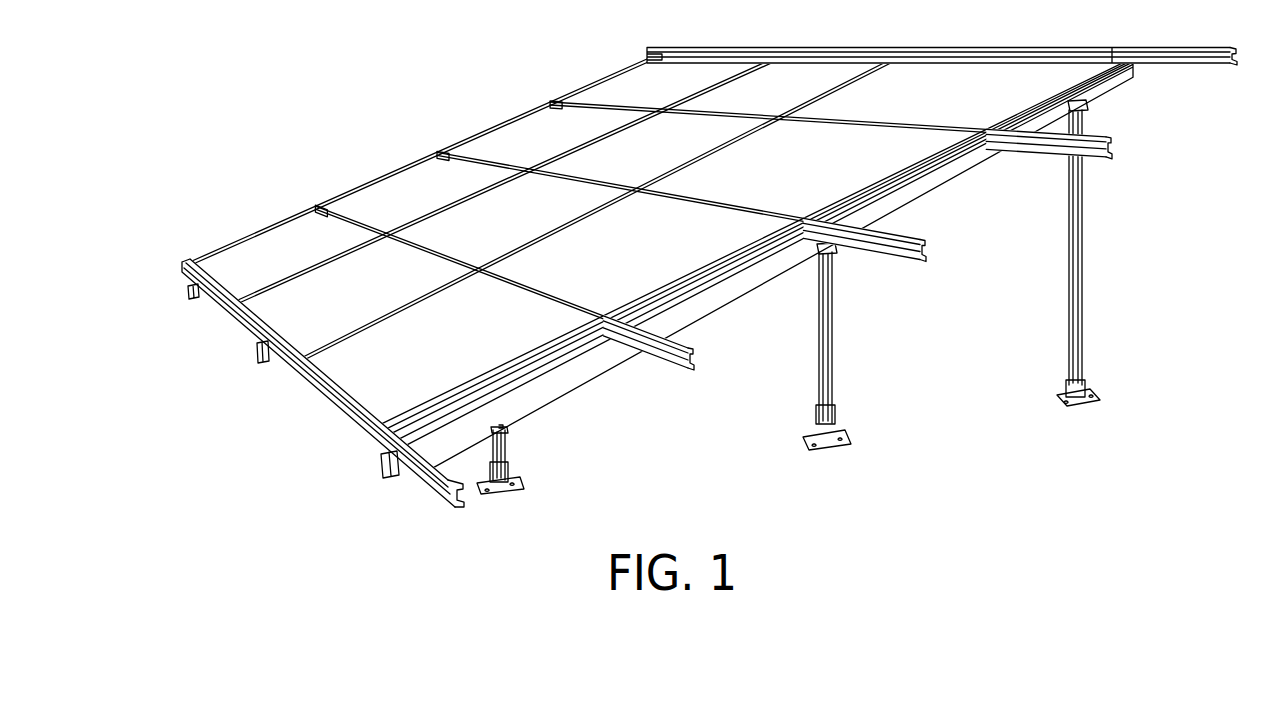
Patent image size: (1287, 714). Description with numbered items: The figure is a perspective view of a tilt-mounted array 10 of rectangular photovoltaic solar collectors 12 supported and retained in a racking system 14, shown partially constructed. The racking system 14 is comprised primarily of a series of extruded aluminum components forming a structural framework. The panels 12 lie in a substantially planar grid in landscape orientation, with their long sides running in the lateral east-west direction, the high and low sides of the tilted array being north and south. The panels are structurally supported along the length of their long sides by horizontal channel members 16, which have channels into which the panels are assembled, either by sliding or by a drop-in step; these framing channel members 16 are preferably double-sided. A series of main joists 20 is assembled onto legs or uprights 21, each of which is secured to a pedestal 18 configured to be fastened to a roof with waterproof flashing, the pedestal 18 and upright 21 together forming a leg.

The tilt-mounted array 10 is at (470, 100).
The photovoltaic solar collector 12 is at (807, 177).
The racking system 14 is at (370, 170).
The channel member 16 is at (430, 492).
The pedestal 18 is at (506, 470).
The main joist 20 is at (192, 296).
The leg 21 is at (505, 447).